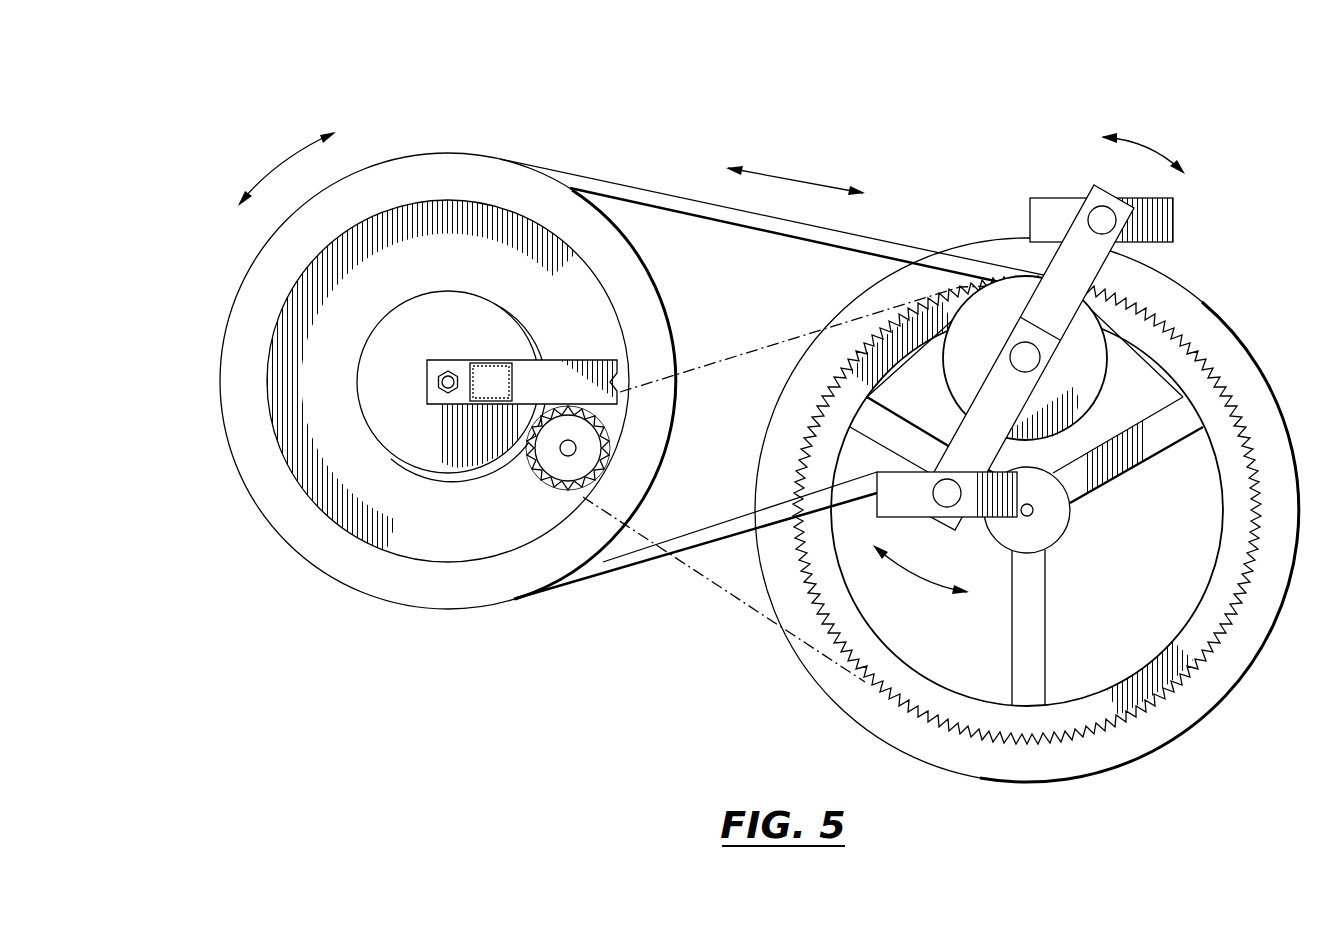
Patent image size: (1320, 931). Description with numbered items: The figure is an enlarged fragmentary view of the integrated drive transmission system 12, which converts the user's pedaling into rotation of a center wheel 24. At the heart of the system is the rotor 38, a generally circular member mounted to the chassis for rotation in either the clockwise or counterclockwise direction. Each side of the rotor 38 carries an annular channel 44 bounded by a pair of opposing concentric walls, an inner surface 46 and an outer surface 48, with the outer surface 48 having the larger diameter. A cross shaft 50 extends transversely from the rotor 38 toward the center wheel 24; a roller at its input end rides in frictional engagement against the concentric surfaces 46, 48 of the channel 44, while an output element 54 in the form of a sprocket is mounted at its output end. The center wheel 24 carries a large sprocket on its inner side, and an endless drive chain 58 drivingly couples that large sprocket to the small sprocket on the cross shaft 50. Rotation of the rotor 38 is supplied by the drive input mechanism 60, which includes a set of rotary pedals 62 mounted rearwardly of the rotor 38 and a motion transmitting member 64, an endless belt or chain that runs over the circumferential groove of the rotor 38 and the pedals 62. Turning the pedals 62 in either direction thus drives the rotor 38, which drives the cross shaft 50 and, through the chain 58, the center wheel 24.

The integrated drive transmission system 12 is at (463, 333).
The center wheel 24 is at (1187, 705).
The rotor 38 is at (270, 510).
The annular channel 44 is at (410, 528).
The inner concentric surface 46 is at (490, 303).
The outer concentric surface 48 is at (605, 283).
The cross shaft 50 is at (570, 452).
The output element 54 is at (587, 447).
The endless drive chain 58 is at (700, 578).
The drive input mechanism 60 is at (1188, 268).
The set of rotary pedals 62 is at (1087, 377).
The motion transmitting member 64 is at (643, 200).